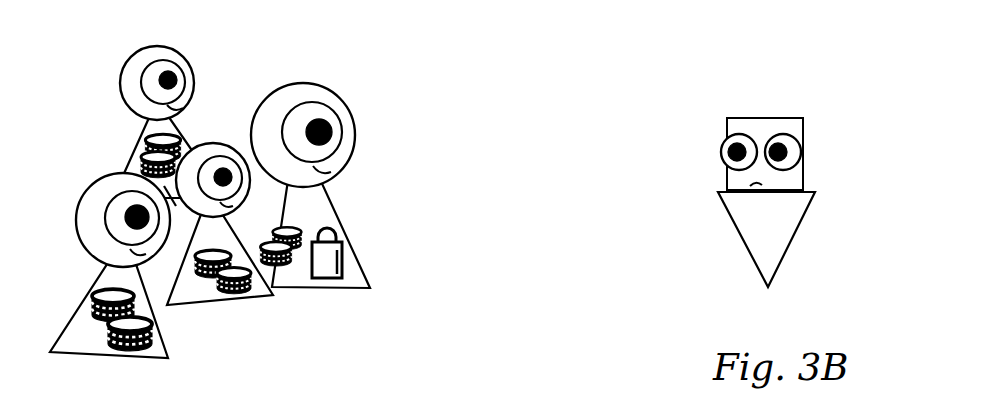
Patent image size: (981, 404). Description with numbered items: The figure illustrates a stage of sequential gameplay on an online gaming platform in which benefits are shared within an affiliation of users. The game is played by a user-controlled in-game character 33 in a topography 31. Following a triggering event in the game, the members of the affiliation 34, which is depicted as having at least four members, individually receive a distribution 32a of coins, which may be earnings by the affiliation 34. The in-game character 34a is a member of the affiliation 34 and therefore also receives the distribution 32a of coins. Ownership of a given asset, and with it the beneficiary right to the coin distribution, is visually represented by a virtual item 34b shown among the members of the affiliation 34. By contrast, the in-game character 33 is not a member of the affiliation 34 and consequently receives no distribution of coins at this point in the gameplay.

The topography 31 is at (809, 151).
The distribution of coins 32a is at (360, 207).
The in-game character 33 is at (777, 233).
The affiliation 34 is at (228, 343).
The in-game character 34a is at (358, 292).
The virtual item 34b is at (347, 280).